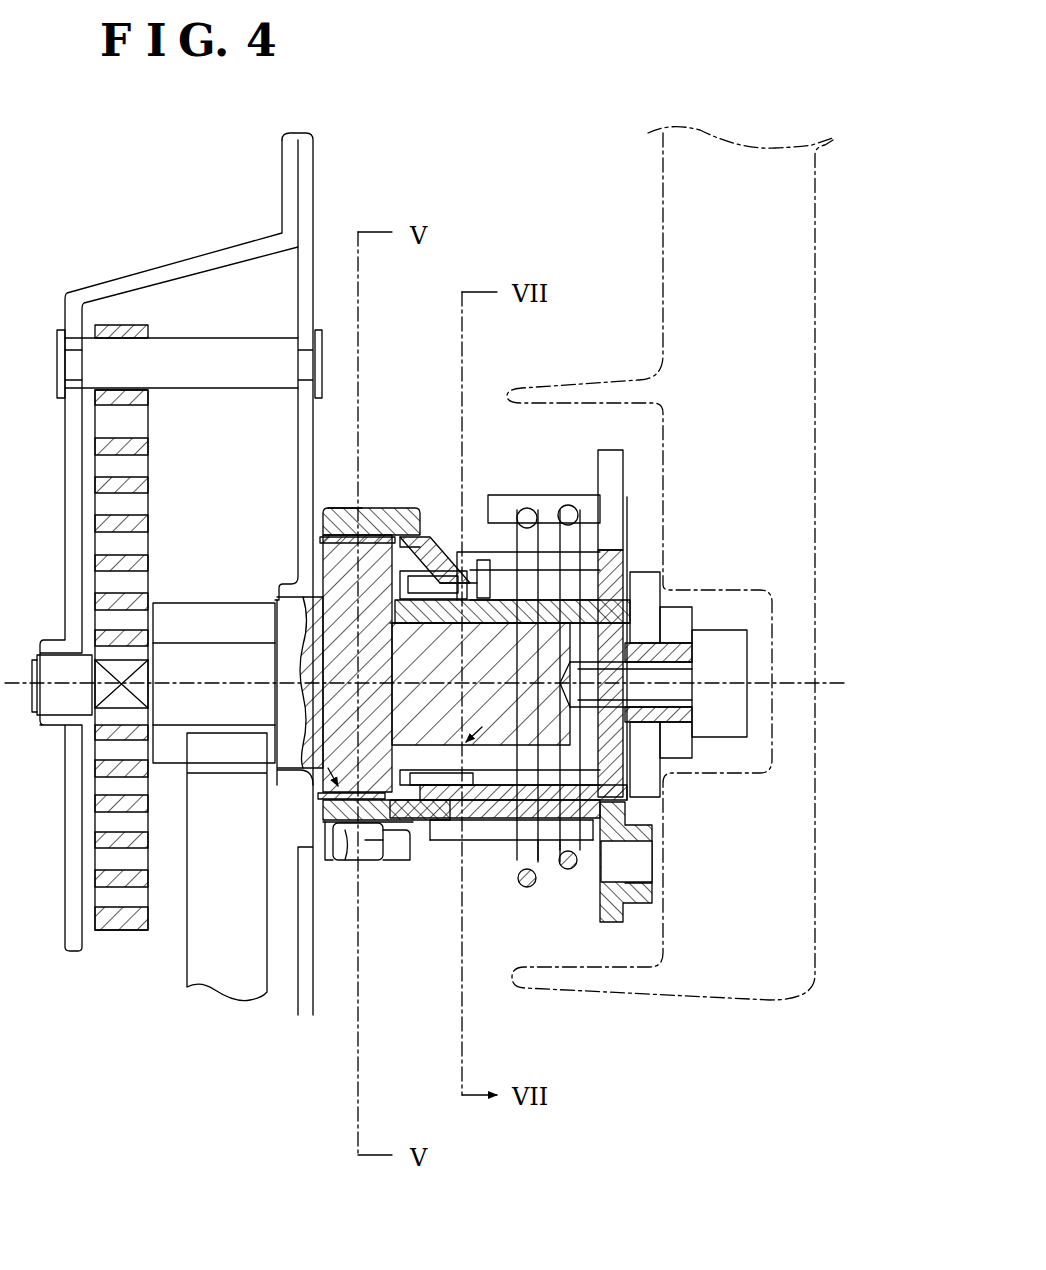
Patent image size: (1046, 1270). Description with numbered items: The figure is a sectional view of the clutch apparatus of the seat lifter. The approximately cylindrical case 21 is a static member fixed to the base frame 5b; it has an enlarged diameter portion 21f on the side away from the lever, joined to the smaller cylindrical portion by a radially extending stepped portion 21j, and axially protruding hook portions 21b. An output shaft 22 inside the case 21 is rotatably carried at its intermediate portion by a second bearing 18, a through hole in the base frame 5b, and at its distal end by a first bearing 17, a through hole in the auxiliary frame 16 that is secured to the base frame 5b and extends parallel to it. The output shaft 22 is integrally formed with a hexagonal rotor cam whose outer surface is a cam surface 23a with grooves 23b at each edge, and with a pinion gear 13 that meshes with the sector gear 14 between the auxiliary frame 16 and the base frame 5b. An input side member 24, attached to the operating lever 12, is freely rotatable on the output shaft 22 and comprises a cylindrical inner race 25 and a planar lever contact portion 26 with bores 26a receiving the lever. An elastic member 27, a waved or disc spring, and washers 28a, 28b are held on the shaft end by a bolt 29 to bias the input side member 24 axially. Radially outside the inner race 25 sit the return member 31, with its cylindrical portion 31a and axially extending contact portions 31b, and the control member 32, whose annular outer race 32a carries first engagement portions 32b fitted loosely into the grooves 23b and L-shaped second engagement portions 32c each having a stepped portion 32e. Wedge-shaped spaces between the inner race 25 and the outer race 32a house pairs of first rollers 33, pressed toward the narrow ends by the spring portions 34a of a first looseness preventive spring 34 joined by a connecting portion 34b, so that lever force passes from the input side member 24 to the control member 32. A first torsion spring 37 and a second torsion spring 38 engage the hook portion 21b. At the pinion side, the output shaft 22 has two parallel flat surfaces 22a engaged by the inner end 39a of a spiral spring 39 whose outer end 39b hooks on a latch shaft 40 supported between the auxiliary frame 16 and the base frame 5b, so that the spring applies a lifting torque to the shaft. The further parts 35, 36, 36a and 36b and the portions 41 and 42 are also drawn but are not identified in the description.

The base frame 5b is at (315, 165).
The operating lever 12 is at (815, 365).
The pinion gear 13 is at (175, 603).
The sector gear 14 is at (188, 978).
The auxiliary frame 16 is at (282, 180).
The first bearing 17 is at (38, 655).
The second bearing 18 is at (290, 580).
The case 21 is at (412, 868).
The hook portion 21b is at (388, 862).
The enlarged diameter portion 21f is at (352, 880).
The stepped portion 21j is at (455, 868).
The output shaft 22 is at (448, 729).
The flat surfaces 22a is at (150, 690).
The cam surface 23a is at (350, 520).
The grooves 23b is at (335, 805).
The input side member 24 is at (607, 450).
The inner race 25 is at (486, 623).
The lever contact portion 26 is at (625, 912).
The bores 26a is at (652, 870).
The elastic member 27 is at (657, 573).
The washer 28a is at (645, 598).
The washer 28b is at (675, 618).
The bolt 29 is at (733, 653).
The return member 31 is at (490, 805).
The cylindrical portion 31a is at (550, 862).
The contact portions 31b is at (478, 842).
The control member 32 is at (367, 537).
The outer race 32a is at (452, 580).
The first engagement portions 32b is at (345, 818).
The second engagement portions 32c is at (348, 508).
The stepped portion 32e is at (420, 537).
The first rollers 33 is at (520, 507).
The first looseness preventive spring 34 is at (430, 571).
The spring portions 34a is at (483, 560).
The connecting portion 34b is at (412, 623).
The seal 35 is at (425, 840).
The seal 36 is at (330, 865).
The seal lip 36a is at (330, 848).
The seal lip 36b is at (325, 538).
The first torsion spring 37 is at (527, 888).
The second torsion spring 38 is at (568, 870).
The spiral spring 39 is at (150, 420).
The inner end 39a is at (148, 640).
The outer end 39b is at (150, 327).
The latch shaft 40 is at (260, 338).
The groove 41 is at (488, 719).
The groove 42 is at (336, 762).